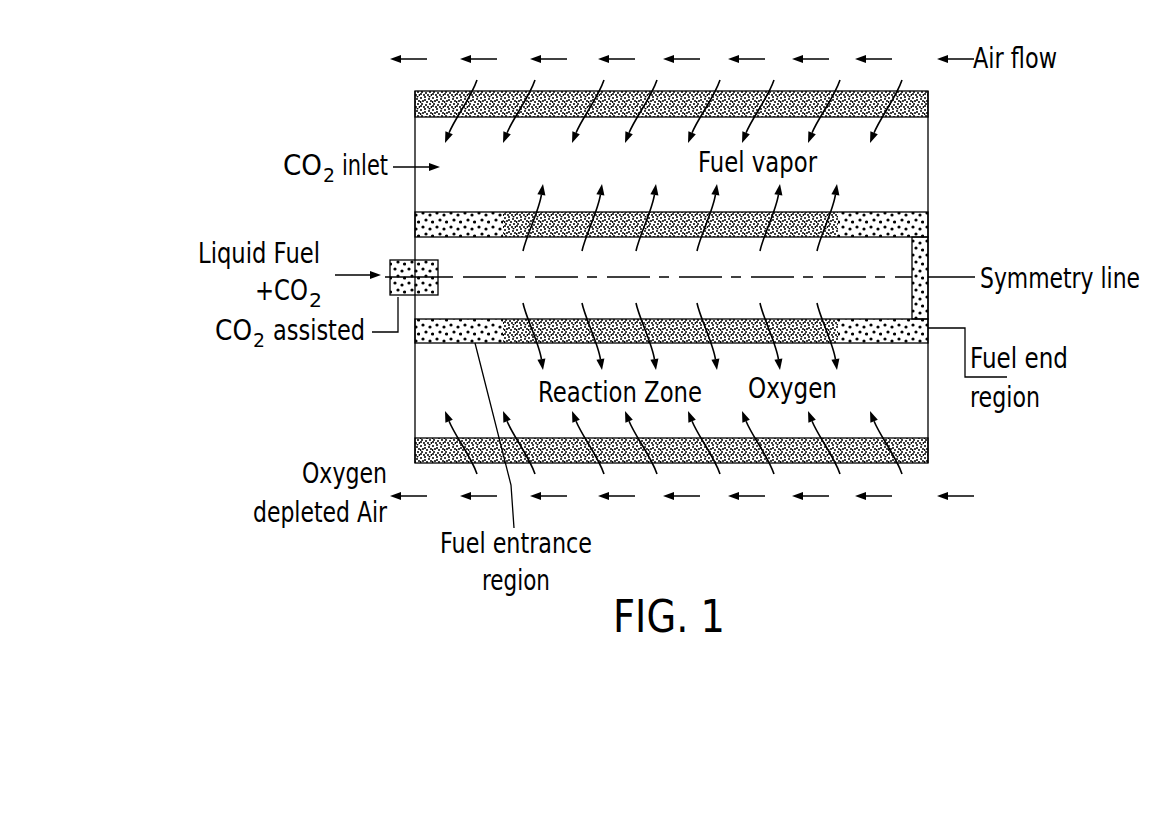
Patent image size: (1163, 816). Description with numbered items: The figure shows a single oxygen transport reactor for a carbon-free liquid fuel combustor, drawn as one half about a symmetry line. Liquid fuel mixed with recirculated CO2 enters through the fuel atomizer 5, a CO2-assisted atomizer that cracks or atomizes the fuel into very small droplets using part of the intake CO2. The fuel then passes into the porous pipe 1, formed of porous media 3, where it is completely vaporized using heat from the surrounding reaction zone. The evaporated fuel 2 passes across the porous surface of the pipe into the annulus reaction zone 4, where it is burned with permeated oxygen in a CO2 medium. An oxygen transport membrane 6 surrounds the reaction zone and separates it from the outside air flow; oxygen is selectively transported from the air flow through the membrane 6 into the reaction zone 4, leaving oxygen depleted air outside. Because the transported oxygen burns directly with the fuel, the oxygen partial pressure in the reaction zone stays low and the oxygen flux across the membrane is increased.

The porous pipe 1 is at (817, 237).
The evaporated fuel 2 is at (838, 182).
The porous pipe 3 is at (815, 343).
The annulus reaction zone 4 is at (718, 395).
The fuel atomizer 5 is at (430, 387).
The oxygen transport membrane 6 is at (928, 107).